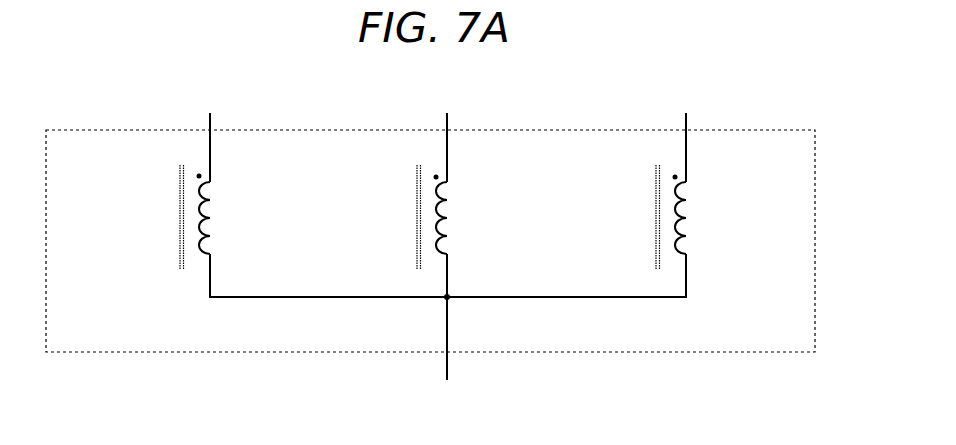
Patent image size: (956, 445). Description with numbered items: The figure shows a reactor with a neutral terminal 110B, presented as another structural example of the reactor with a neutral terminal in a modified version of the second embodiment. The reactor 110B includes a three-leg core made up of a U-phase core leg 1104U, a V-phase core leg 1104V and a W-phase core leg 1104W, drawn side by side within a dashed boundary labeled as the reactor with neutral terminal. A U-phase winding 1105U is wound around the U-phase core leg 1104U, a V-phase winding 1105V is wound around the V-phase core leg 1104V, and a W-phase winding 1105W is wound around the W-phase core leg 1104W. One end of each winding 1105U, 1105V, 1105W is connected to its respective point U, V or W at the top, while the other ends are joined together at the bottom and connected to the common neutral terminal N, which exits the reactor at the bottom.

The reactor with neutral terminal 110B is at (262, 129).
The U-phase core leg 1104U is at (179, 243).
The V-phase core leg 1104V is at (416, 244).
The W-phase core leg 1104W is at (655, 244).
The U-phase winding 1105U is at (210, 207).
The V-phase winding 1105V is at (447, 207).
The W-phase winding 1105W is at (686, 207).